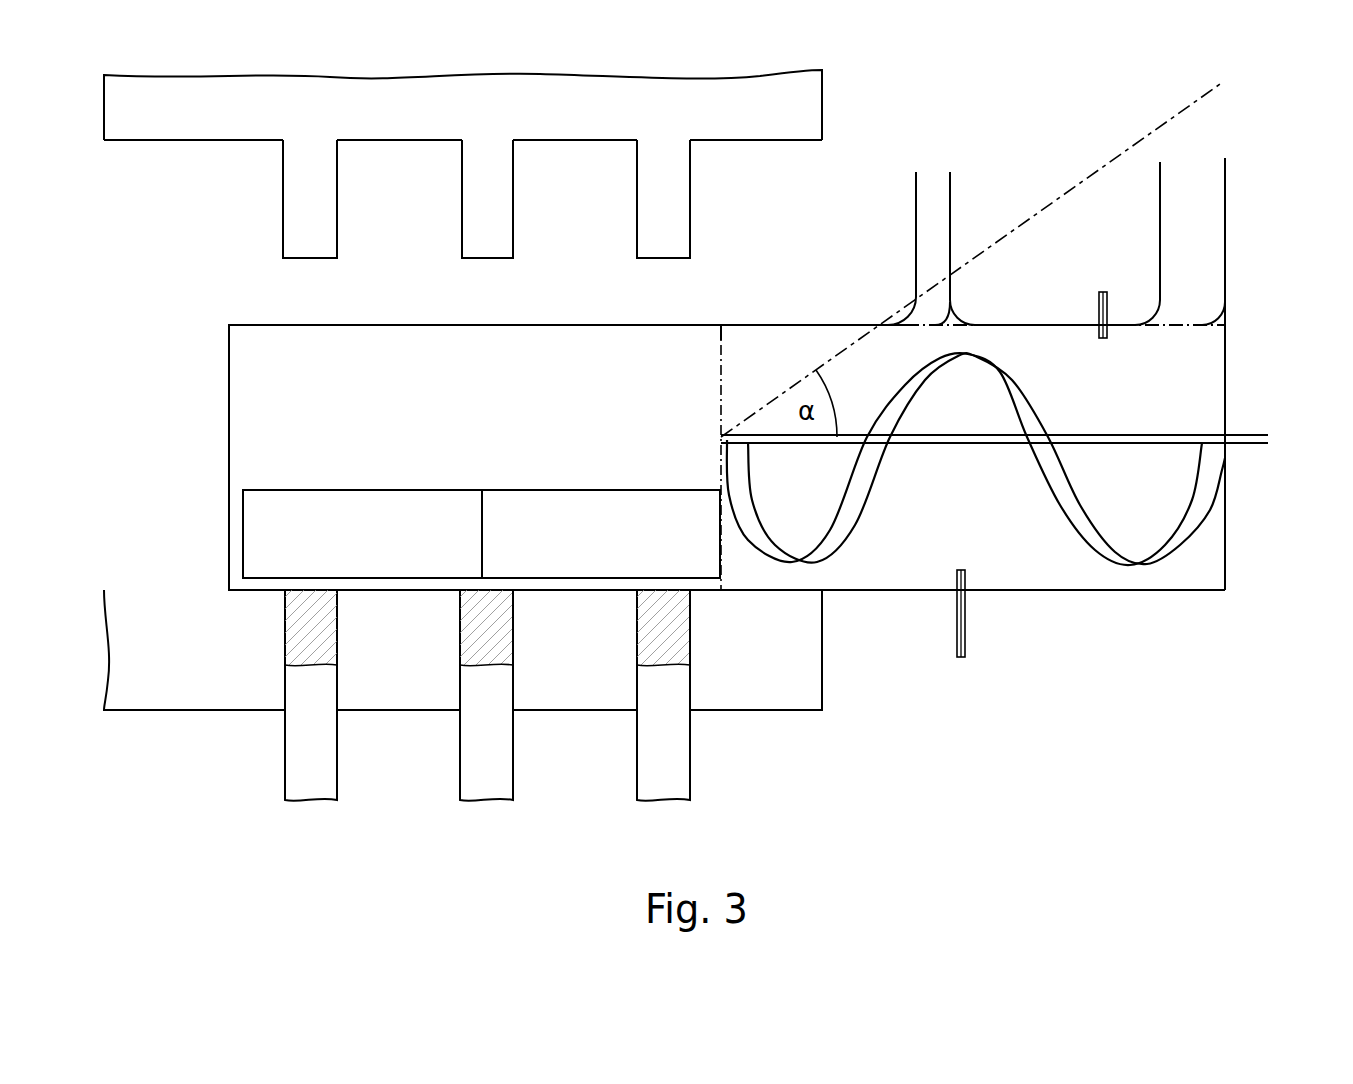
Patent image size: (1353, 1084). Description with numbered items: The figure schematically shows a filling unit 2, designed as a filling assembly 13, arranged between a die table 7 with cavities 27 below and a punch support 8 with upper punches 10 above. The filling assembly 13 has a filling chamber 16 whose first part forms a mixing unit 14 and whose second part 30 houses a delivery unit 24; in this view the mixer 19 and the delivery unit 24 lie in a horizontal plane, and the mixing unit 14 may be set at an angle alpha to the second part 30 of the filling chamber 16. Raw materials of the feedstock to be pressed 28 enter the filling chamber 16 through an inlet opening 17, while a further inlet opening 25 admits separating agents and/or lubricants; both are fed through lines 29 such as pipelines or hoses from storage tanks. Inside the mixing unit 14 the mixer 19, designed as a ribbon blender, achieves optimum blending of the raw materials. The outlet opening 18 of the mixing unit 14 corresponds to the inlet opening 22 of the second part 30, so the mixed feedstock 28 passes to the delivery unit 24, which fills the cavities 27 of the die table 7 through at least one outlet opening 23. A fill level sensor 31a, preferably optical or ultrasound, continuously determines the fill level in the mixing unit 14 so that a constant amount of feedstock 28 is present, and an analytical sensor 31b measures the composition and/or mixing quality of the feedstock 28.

The filling unit 2 is at (1022, 735).
The die table 7 is at (152, 688).
The punch support 8 is at (805, 108).
The upper punch 10 is at (326, 212).
The filling assembly 13 is at (1060, 173).
The mixing unit 14 is at (1062, 615).
The filling chamber 16 is at (773, 302).
The inlet opening 17 is at (1214, 316).
The outlet opening 18 is at (724, 353).
The mixer 19 is at (1172, 550).
The inlet opening 22 is at (716, 382).
The outlet opening 23 is at (478, 592).
The delivery unit 24 is at (322, 505).
The inlet opening 25 is at (945, 309).
The cavities 27 is at (283, 688).
The feedstock 28 is at (325, 645).
The lines 29 is at (940, 207).
The second part of the filling chamber 30 is at (301, 370).
The fill level sensor 31a is at (1104, 291).
The analytical sensor 31b is at (957, 627).